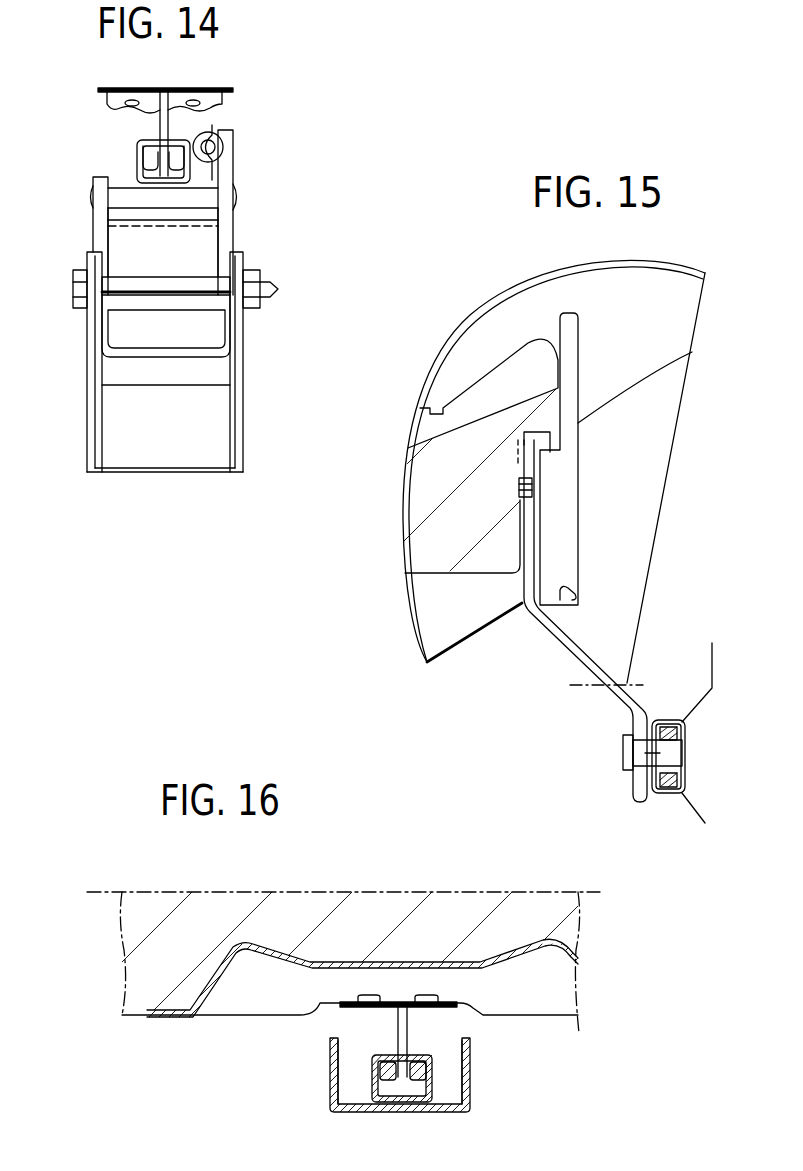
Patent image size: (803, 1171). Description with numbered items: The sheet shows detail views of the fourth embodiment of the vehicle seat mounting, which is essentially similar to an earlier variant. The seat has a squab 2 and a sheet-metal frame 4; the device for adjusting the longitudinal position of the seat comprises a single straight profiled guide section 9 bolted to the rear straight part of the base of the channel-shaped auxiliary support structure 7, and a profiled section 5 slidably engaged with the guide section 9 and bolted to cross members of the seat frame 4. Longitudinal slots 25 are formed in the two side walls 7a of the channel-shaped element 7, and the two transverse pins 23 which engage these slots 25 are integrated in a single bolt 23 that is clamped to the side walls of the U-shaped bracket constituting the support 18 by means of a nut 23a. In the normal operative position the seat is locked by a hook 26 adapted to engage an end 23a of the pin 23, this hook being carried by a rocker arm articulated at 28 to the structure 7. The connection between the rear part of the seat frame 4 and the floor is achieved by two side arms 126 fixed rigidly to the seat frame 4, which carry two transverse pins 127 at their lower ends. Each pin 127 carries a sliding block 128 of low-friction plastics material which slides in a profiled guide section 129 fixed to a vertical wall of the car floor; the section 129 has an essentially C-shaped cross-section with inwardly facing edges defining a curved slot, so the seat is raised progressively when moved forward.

In FIG. 16, the squab 2 is at (213, 908).
In FIG. 14, the sheet-metal frame 4 is at (218, 86).
In FIG. 16, the sheet-metal frame 4 is at (410, 997).
In FIG. 14, the profiled section 5 is at (168, 128).
In FIG. 16, the profiled section 5 is at (407, 1025).
In FIG. 14, the auxiliary support structure 7 is at (86, 224).
In FIG. 16, the auxiliary support structure 7 is at (326, 1070).
In FIG. 14, the side walls 7a is at (98, 318).
In FIG. 16, the side walls 7a is at (506, 1040).
In FIG. 14, the profiled guide section 9 is at (137, 153).
In FIG. 16, the profiled guide section 9 is at (430, 1083).
In FIG. 14, the bracket 18 is at (250, 407).
In FIG. 14, the transverse pins 23 is at (148, 288).
In FIG. 14, the nut 23a is at (250, 283).
In FIG. 16, the longitudinal slots 25 is at (330, 1092).
In FIG. 14, the hook 26 is at (227, 238).
In FIG. 14, the articulation 28 is at (195, 195).
In FIG. 15, the side arms 126 is at (567, 652).
In FIG. 15, the transverse pins 127 is at (628, 748).
In FIG. 15, the sliding block 128 is at (665, 720).
In FIG. 15, the profiled guide section 129 is at (682, 793).